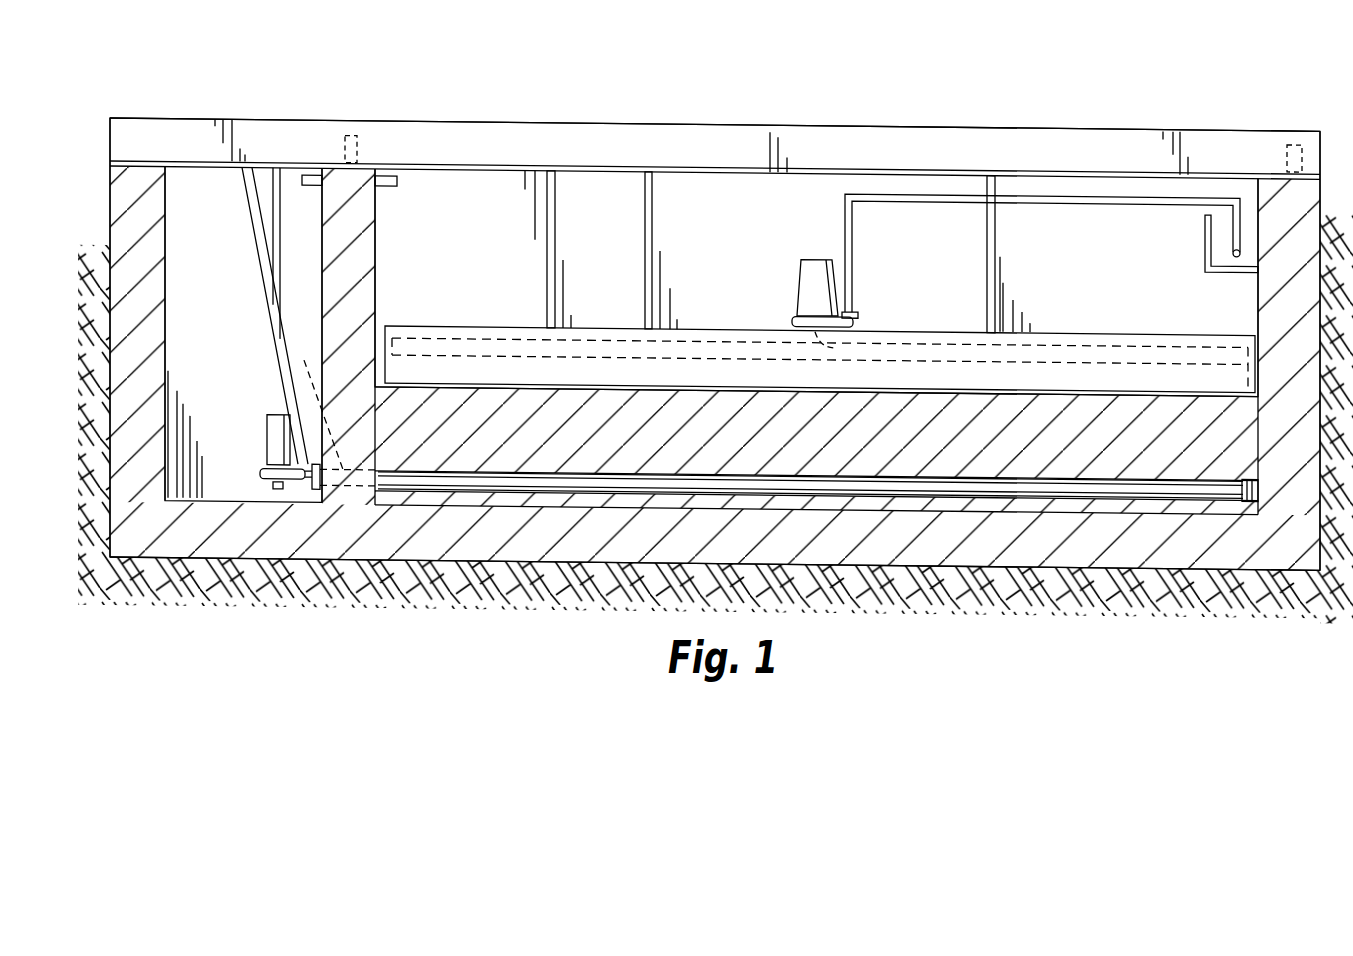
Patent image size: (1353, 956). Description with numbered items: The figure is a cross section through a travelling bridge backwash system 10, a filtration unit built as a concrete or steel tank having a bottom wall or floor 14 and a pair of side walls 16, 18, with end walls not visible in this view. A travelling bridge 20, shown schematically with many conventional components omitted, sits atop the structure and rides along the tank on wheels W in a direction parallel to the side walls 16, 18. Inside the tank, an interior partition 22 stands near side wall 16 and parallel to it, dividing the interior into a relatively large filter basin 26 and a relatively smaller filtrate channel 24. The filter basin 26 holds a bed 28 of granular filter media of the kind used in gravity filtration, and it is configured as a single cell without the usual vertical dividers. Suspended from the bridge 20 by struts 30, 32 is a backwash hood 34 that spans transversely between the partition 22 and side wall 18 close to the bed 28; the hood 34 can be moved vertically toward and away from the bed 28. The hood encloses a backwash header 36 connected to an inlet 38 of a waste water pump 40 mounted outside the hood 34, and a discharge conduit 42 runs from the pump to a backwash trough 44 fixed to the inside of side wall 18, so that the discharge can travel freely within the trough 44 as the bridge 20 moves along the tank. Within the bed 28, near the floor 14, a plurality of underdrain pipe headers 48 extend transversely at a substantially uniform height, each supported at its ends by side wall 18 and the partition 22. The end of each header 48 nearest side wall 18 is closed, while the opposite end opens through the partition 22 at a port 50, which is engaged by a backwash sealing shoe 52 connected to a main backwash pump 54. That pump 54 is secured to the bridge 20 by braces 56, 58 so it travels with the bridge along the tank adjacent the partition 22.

The travelling bridge backwash system 10 is at (1020, 100).
The bottom wall or floor 14 is at (572, 553).
The side wall 16 is at (110, 203).
The side wall 18 is at (1320, 207).
The travelling bridge 20 is at (628, 112).
The interior partition 22 is at (375, 270).
The filtrate channel 24 is at (217, 264).
The filter basin 26 is at (490, 247).
The bed of filter media 28 is at (583, 402).
The strut 30 is at (653, 211).
The strut 32 is at (993, 247).
The backwash hood 34 is at (719, 313).
The backwash header 36 is at (890, 344).
The inlet 38 is at (822, 325).
The waste water pump 40 is at (820, 252).
The discharge conduit 42 is at (902, 193).
The backwash trough 44 is at (1205, 232).
The underdrain pipe header 48 is at (622, 476).
The port 50 is at (335, 410).
The backwash sealing shoe 52 is at (318, 488).
The main backwash pump 54 is at (273, 435).
The brace 56 is at (272, 325).
The brace 58 is at (280, 270).
The wheels W is at (360, 148).